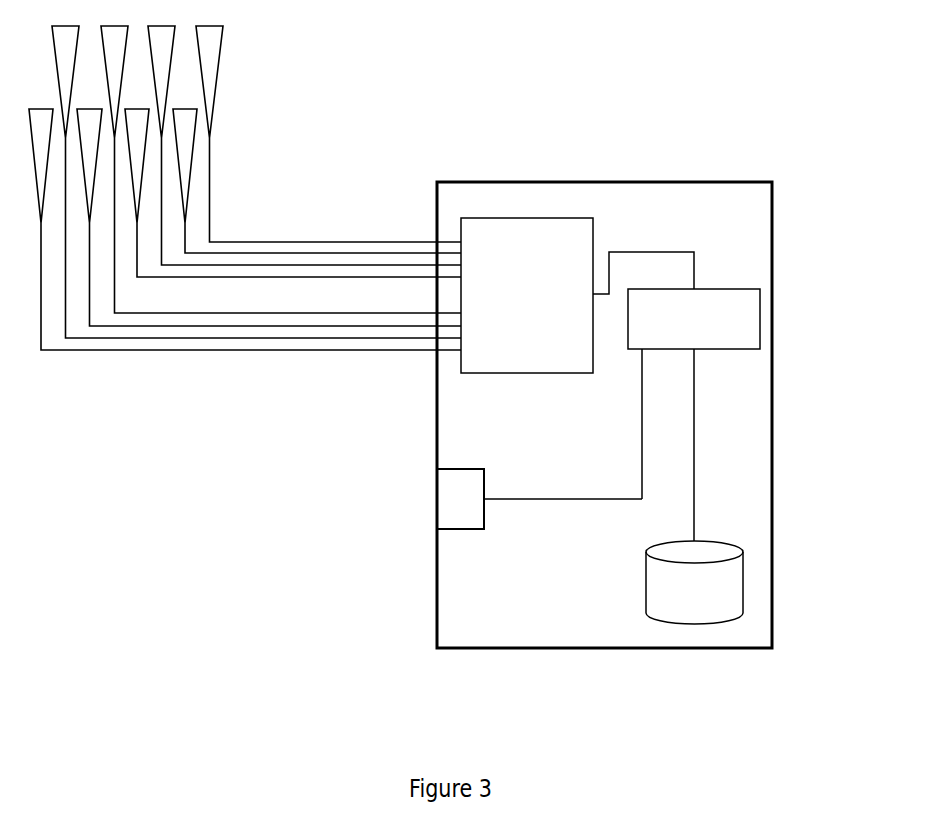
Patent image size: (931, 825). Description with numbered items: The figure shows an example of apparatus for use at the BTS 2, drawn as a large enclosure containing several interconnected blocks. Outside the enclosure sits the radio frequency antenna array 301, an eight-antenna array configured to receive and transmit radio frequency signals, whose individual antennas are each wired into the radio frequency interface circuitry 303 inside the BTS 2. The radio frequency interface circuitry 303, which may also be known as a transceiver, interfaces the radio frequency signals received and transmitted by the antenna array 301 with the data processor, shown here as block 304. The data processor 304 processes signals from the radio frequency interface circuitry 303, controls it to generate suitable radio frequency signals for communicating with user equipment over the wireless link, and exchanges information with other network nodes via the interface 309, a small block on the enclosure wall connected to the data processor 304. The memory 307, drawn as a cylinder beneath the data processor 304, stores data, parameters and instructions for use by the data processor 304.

The radio frequency antenna array 301 is at (233, 73).
The BTS 2 is at (772, 412).
The radio frequency interface circuitry 303 is at (527, 218).
The processor / control unit 304 is at (760, 318).
The interface 309 is at (437, 499).
The memory 307 is at (743, 582).